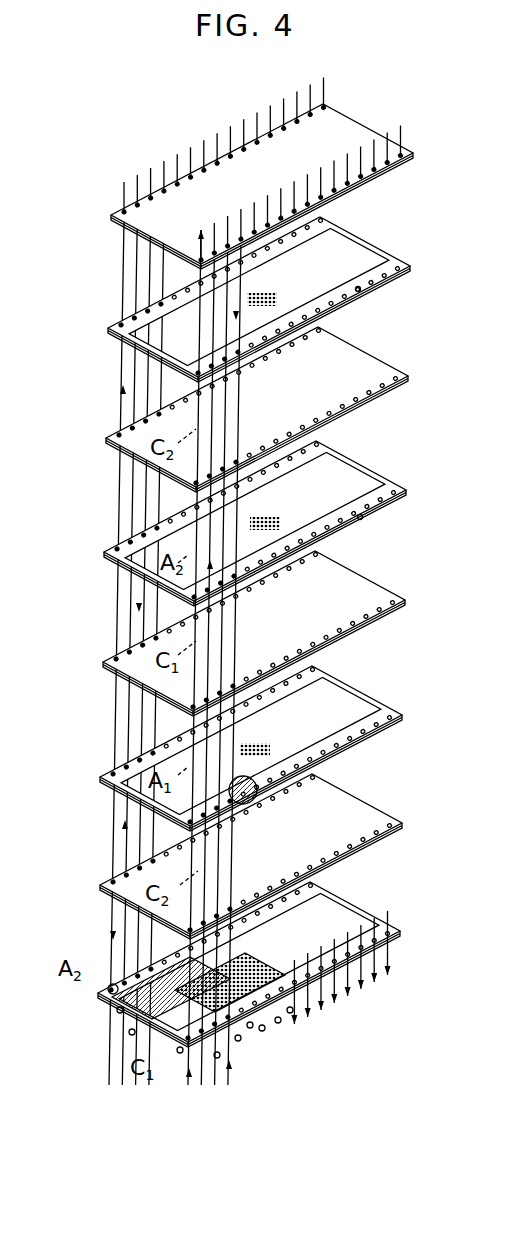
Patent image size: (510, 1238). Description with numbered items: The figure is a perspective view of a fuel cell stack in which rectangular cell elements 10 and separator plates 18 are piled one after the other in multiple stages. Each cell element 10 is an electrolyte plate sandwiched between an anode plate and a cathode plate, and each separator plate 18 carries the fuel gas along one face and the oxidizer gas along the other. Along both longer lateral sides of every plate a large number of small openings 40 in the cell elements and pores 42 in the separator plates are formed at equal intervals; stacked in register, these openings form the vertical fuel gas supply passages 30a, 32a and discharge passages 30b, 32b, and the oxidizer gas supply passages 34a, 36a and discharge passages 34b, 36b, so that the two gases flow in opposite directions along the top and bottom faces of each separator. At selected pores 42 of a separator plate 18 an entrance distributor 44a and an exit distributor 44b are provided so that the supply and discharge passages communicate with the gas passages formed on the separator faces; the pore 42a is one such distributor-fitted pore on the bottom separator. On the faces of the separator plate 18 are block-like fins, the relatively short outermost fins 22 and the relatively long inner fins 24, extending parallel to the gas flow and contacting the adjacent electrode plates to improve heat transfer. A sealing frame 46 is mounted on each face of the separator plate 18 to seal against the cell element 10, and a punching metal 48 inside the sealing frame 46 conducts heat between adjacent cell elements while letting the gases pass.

The cell element 10 is at (382, 130).
The separator plate 18 is at (397, 249).
The small openings 40 is at (186, 185).
The punching metal 48 is at (362, 246).
The pores 42 is at (360, 291).
The oxidizer gas supply passage 34a is at (140, 630).
The oxidizer gas discharge passage 34b is at (222, 640).
The fuel gas supply passage 30a is at (148, 830).
The fuel gas discharge passage 30b is at (235, 864).
The exit distributor 44b is at (253, 800).
The sealing frame 46 is at (394, 940).
The outermost fins 22 is at (272, 965).
The inner fins 24 is at (215, 962).
The oxidizer gas discharge passage 36b is at (118, 1012).
The fuel gas discharge passage 32b is at (130, 1035).
The oxidizer gas supply passage 36a is at (178, 1052).
The fuel gas supply passage 32a is at (216, 1058).
The entrance distributor 44a is at (238, 1040).
The through hole 42a is at (280, 1022).